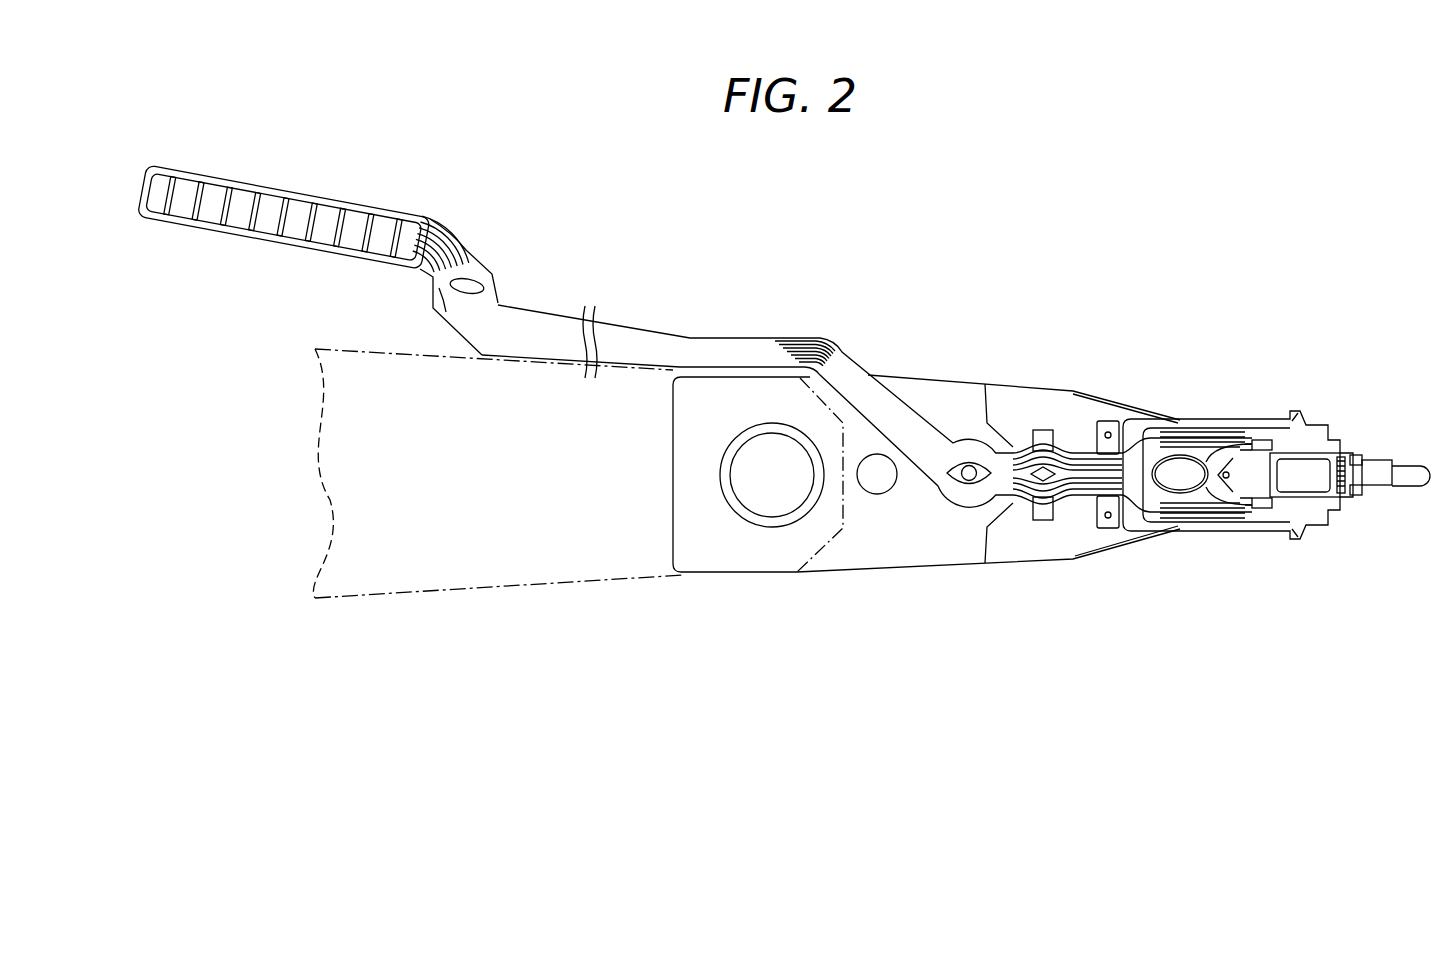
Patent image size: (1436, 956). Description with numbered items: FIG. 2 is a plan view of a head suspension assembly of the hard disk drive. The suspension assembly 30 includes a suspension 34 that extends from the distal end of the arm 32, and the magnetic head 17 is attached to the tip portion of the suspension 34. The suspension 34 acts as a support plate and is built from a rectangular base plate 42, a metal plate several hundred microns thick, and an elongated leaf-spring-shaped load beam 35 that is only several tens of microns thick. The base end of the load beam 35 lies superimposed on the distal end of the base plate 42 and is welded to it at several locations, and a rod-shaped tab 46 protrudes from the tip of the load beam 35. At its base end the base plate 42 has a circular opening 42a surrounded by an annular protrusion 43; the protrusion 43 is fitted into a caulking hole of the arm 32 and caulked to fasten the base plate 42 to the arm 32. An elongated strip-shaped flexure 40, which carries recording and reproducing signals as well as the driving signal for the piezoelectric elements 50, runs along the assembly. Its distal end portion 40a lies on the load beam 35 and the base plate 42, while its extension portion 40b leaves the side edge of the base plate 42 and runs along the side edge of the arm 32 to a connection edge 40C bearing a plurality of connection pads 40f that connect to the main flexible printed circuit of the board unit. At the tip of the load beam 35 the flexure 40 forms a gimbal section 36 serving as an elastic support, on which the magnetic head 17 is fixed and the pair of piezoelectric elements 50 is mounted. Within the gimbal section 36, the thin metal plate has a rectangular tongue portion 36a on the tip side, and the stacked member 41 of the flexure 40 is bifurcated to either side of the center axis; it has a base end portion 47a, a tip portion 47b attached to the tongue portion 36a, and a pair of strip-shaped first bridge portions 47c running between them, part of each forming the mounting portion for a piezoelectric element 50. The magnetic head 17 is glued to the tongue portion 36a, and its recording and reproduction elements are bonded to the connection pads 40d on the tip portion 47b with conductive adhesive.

The suspension assembly 30 is at (1133, 308).
The arm 32 is at (512, 575).
The suspension 34 is at (855, 628).
The load beam 35 is at (1065, 545).
The gimbal section 36 is at (1117, 580).
The tongue portion 36a is at (1312, 452).
The flexure 40 is at (883, 407).
The distal end portion 40a is at (1087, 463).
The extension portion 40b is at (640, 348).
The connection edge 40C is at (378, 212).
The connection pads 40d is at (1348, 478).
The connection pads 40f is at (210, 220).
The stacked member 41 is at (1133, 418).
The base plate 42 is at (878, 556).
The circular opening 42a is at (772, 500).
The annular protrusion 43 is at (745, 517).
The tab 46 is at (1400, 470).
The base end portion 47a is at (1192, 445).
The tip portion 47b is at (1354, 462).
The first bridge portions 47c is at (1246, 440).
The piezoelectric element 50 is at (1264, 442).
The magnetic head 17 is at (1318, 480).